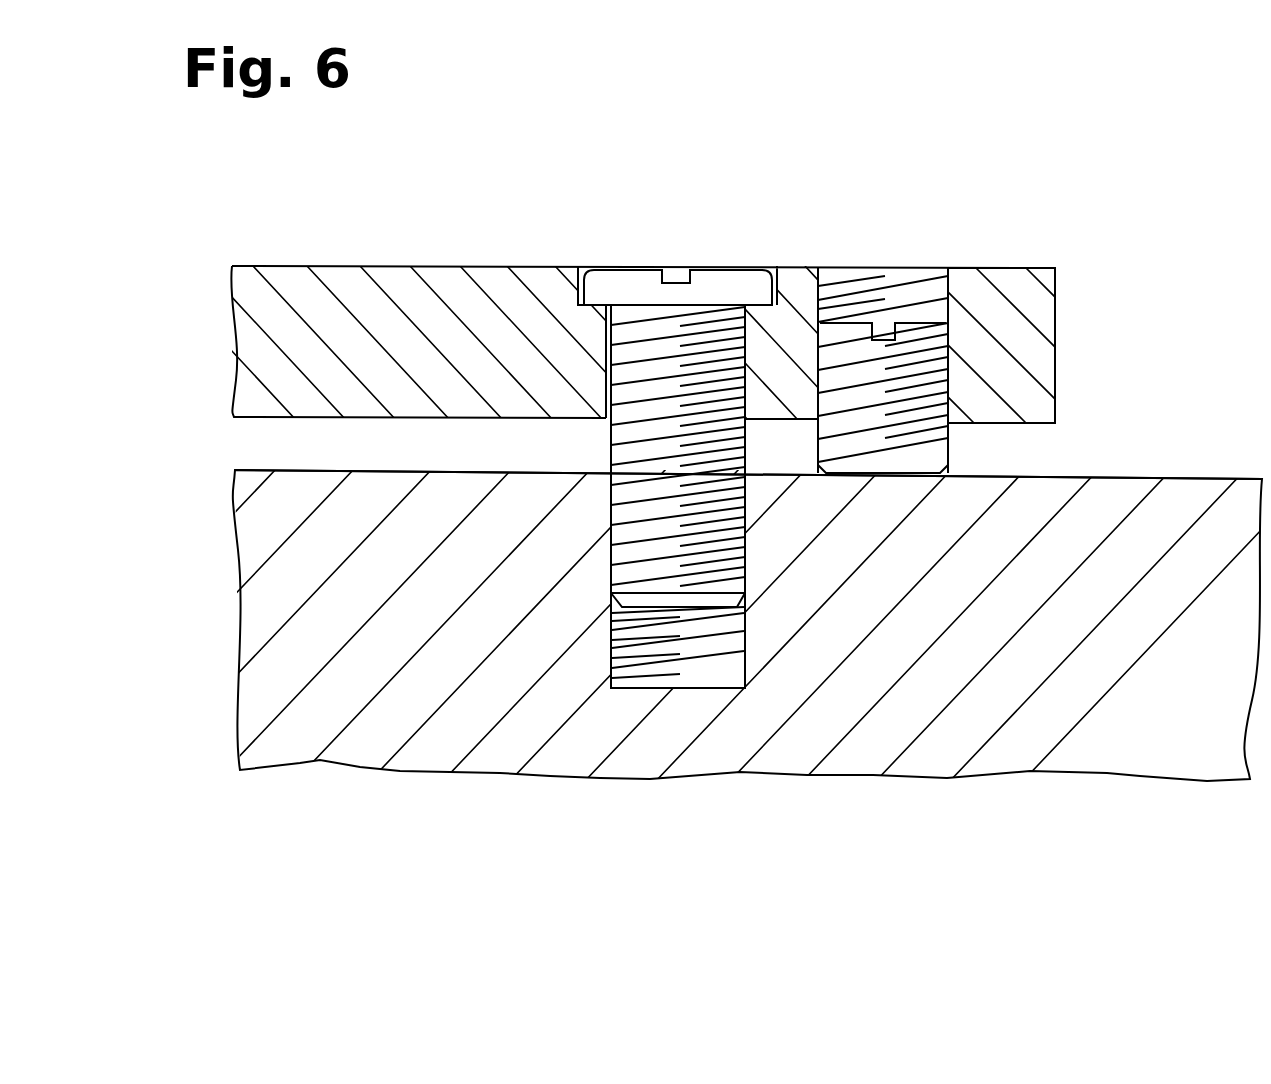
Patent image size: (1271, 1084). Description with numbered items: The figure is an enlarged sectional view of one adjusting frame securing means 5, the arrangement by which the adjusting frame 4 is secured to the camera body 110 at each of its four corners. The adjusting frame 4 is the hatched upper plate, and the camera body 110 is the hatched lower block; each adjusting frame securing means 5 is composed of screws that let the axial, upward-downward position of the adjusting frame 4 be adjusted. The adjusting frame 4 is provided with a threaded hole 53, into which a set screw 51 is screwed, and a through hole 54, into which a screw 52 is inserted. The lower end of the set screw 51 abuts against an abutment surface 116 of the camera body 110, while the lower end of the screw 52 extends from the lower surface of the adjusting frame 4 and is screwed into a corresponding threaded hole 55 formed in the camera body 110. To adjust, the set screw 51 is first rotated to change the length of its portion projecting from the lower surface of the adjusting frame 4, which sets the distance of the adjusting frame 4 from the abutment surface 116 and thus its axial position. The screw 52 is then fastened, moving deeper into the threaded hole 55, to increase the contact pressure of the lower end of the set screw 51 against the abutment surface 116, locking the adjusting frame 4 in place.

The adjusting frame 4 is at (444, 318).
The adjusting frame securing means 5 is at (655, 217).
The set screw 51 is at (872, 380).
The screw 52 is at (683, 378).
The threaded hole 53 is at (948, 292).
The through hole 54 is at (606, 372).
The threaded hole 55 is at (612, 663).
The camera body 110 is at (952, 740).
The abutment surface 116 is at (1113, 476).